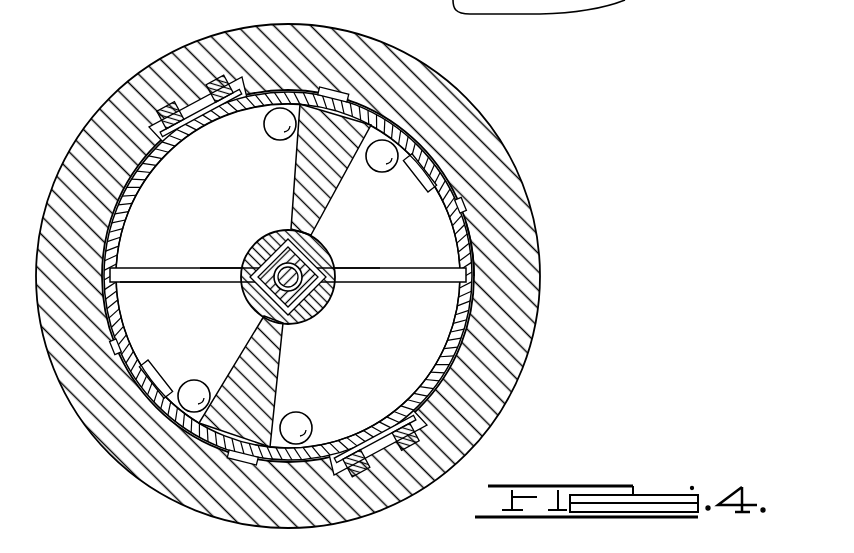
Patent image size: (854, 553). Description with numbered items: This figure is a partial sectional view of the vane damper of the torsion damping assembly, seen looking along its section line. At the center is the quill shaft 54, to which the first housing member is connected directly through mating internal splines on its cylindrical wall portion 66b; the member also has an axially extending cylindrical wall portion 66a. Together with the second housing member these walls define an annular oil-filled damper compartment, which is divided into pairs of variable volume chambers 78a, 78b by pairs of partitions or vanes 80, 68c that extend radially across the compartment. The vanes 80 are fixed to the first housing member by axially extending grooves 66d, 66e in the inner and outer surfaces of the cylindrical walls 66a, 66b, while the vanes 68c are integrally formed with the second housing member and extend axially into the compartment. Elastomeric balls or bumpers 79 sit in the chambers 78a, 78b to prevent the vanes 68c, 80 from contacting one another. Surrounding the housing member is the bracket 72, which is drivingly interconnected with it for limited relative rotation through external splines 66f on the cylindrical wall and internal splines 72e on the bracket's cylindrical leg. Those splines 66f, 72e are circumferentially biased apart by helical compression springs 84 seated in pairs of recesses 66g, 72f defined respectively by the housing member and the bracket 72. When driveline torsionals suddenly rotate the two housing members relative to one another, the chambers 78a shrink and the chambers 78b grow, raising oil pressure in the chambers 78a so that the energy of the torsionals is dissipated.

The quill shaft 54 is at (322, 290).
The bracket 72 is at (190, 37).
The internal splines 72e is at (463, 248).
The recesses 72f is at (177, 97).
The cylindrical wall portion 66a is at (433, 182).
The cylindrical wall portion 66b is at (327, 248).
The axially extending grooves 66d is at (143, 283).
The axially extending grooves 66e is at (245, 270).
The external splines 66f is at (463, 192).
The recesses 66g is at (193, 107).
The vanes 68c is at (297, 203).
The variable volume chambers 78a is at (225, 233).
The variable volume chambers 78b is at (415, 223).
The elastomeric balls or bumpers 79 is at (280, 110).
The vanes 80 is at (148, 268).
The helical compression springs 84 is at (417, 450).